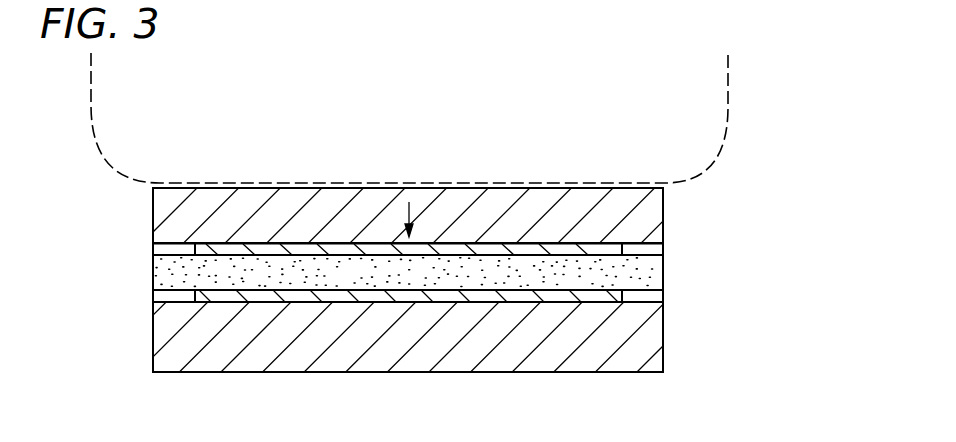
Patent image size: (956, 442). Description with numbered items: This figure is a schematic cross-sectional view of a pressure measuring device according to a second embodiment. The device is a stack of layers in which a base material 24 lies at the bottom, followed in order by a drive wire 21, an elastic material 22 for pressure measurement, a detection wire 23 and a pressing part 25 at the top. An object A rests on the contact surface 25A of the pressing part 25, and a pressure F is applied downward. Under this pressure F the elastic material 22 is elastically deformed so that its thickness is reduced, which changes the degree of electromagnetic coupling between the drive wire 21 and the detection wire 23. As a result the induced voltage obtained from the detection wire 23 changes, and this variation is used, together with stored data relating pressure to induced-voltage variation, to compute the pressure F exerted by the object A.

The object A is at (708, 78).
The pressing part 25 is at (652, 215).
The contact surface 25A is at (579, 187).
The detection wire 23 is at (663, 250).
The elastic material for pressure measurement 22 is at (657, 277).
The drive wire 21 is at (663, 297).
The base material 24 is at (652, 347).
The pressure F is at (418, 217).